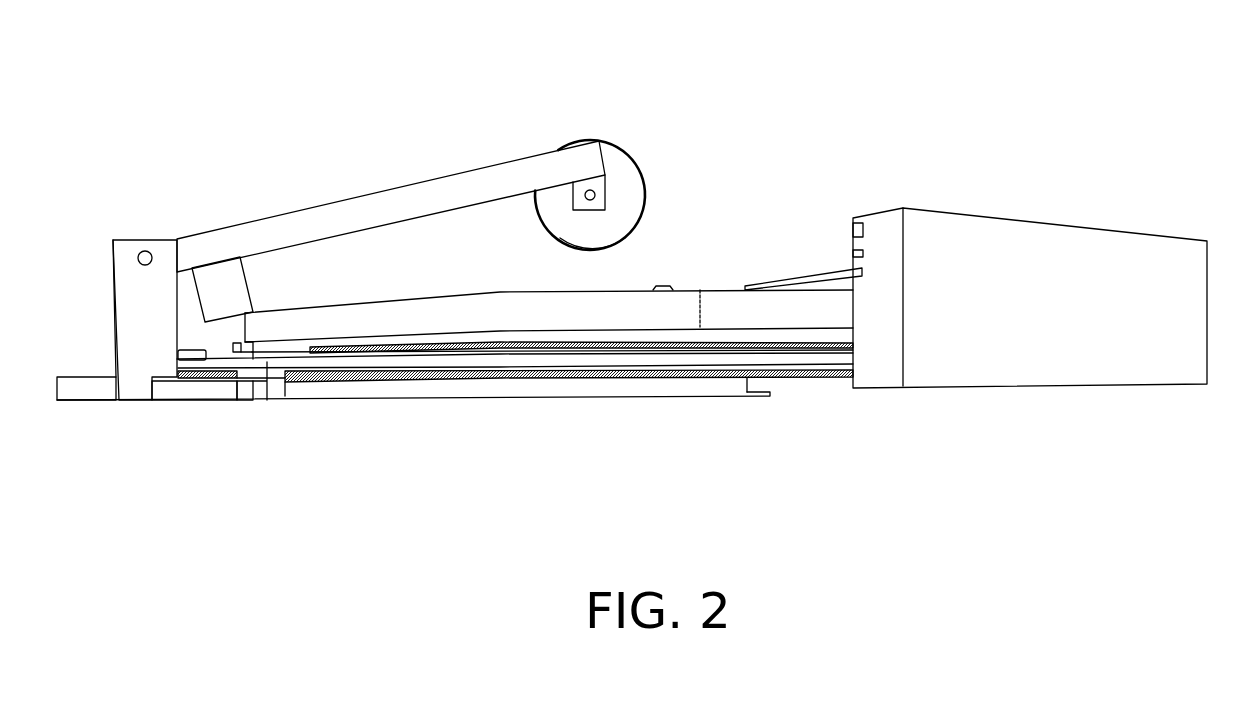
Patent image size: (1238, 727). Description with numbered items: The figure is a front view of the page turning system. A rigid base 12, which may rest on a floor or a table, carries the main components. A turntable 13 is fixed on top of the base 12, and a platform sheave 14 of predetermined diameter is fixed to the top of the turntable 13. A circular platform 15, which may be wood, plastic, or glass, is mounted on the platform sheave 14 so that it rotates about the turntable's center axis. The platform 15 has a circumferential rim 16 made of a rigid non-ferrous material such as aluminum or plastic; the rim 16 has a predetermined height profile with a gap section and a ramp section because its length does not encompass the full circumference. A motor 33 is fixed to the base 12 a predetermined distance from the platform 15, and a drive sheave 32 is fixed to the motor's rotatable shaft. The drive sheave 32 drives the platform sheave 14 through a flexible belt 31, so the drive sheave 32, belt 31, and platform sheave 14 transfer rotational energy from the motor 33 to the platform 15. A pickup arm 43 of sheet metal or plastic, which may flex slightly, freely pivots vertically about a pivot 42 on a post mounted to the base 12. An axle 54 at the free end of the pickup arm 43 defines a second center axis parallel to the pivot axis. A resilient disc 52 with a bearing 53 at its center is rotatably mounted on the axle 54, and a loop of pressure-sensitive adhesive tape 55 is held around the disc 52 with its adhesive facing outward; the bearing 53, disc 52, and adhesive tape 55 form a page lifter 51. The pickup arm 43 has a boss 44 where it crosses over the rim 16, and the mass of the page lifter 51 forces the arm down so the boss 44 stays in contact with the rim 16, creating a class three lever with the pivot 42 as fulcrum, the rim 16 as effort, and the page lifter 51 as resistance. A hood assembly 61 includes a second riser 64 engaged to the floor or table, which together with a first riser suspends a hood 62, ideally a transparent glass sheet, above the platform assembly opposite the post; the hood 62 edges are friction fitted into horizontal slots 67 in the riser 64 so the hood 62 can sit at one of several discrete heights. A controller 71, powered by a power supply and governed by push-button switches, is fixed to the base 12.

The base 12 is at (423, 393).
The turntable 13 is at (718, 387).
The platform sheave 14 is at (337, 375).
The platform 15 is at (507, 338).
The rim 16 is at (792, 312).
The flexible belt 31 is at (268, 382).
The drive sheave 32 is at (188, 349).
The motor 33 is at (203, 402).
The pivot 42 is at (140, 254).
The pickup arm 43 is at (335, 208).
The boss 44 is at (236, 283).
The page lifter 51 is at (605, 157).
The disc 52 is at (620, 167).
The bearing 53 is at (590, 210).
The axle 54 is at (596, 193).
The adhesive tape 55 is at (605, 250).
The hood assembly 61 is at (802, 202).
The hood 62 is at (818, 272).
The second riser 64 is at (1030, 242).
The horizontal slots 67 is at (863, 247).
The controller 71 is at (88, 428).